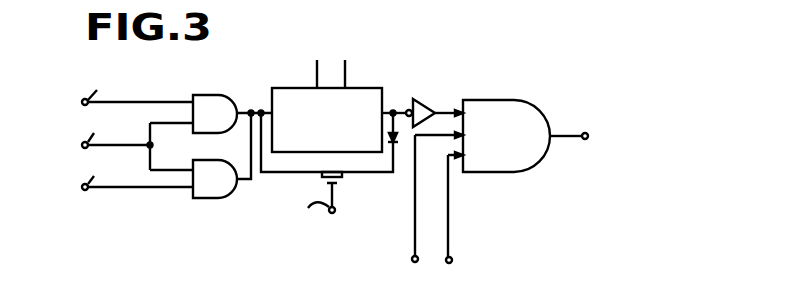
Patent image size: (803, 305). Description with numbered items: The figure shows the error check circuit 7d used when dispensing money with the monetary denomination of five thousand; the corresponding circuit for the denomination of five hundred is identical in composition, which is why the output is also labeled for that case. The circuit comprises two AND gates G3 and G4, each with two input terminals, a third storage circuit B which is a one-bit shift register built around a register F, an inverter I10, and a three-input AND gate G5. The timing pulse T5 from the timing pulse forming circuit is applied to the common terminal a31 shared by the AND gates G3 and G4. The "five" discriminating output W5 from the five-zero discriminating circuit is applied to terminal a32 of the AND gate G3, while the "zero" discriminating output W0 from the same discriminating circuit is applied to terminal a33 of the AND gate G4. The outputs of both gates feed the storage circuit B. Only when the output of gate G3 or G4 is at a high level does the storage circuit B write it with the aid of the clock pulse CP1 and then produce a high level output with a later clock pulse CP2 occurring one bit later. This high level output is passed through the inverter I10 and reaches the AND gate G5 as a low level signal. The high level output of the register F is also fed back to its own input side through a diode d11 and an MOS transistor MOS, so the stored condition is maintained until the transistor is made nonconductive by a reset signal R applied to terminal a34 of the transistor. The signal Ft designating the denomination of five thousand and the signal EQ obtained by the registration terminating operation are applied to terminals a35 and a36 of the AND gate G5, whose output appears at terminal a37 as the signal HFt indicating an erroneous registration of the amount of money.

The common terminal a31 is at (106, 135).
The terminal of the AND gate G3 a32 is at (106, 83).
The terminal of the AND gate G4 a33 is at (108, 176).
The terminal of the transistor MOS a34 is at (312, 215).
The terminal of the AND gate G5 a35 is at (412, 257).
The terminal of the AND gate G5 a36 is at (452, 260).
The output terminal a37 is at (599, 122).
The AND gate G3 is at (232, 114).
The AND gate G4 is at (222, 155).
The AND gate G5 is at (522, 136).
The register F is at (383, 88).
The third storage circuit B is at (307, 176).
The error check circuit 7d is at (464, 89).
The inverter I10 is at (430, 88).
The diode d11 is at (397, 142).
The MOS transistor MOS is at (343, 183).
The reset signal R is at (332, 235).
The clock pulse CP1 is at (312, 59).
The clock pulse CP2 is at (359, 59).
The "5" discriminating output W5 is at (119, 103).
The timing pulse T5 is at (121, 146).
The "0" discriminating output W0 is at (120, 188).
The signal for designating the monetary denomination "5,000" Ft is at (405, 289).
The output signal HFt is at (565, 137).
The signal obtained by the registration terminating operation EQ is at (464, 292).